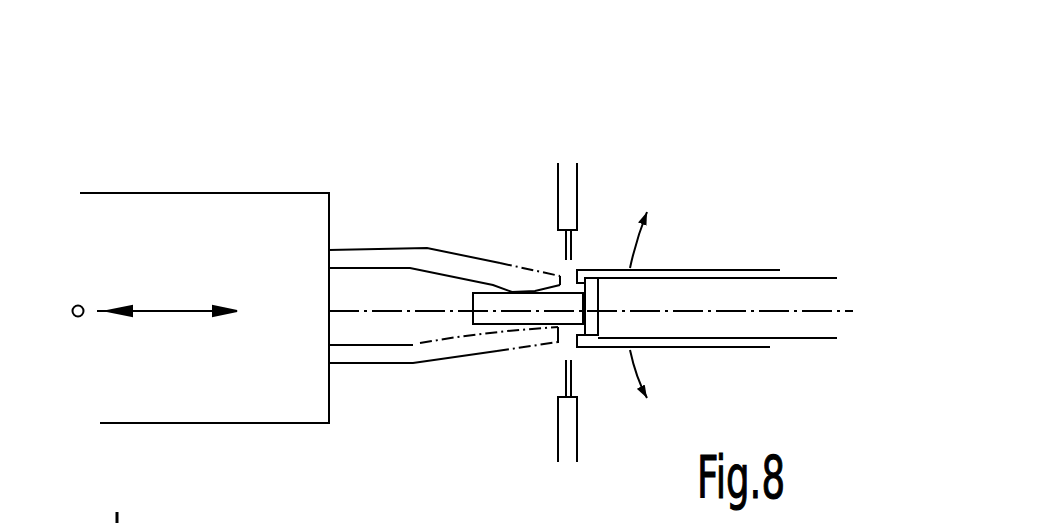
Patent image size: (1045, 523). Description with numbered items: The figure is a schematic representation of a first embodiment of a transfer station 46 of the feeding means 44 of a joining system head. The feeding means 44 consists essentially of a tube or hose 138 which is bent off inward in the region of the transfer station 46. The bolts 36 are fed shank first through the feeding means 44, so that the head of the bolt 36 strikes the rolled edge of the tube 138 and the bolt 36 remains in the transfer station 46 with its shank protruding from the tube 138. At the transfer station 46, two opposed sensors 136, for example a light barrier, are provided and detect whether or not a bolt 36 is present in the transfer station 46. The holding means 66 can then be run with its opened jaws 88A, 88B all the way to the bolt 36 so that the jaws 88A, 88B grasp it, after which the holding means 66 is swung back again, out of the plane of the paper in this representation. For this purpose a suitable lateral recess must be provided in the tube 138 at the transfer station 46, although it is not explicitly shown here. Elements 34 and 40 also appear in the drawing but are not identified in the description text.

The pivot point 34 is at (77, 305).
The axis of movement 40 is at (182, 310).
The holding means 66 is at (377, 187).
The jaw 88A is at (408, 262).
The jaw 88B is at (398, 350).
The bolt 36 is at (498, 303).
The sensors 136 is at (568, 157).
The transfer station 46 is at (632, 173).
The tube 138 is at (672, 268).
The feeding means 44 is at (813, 183).